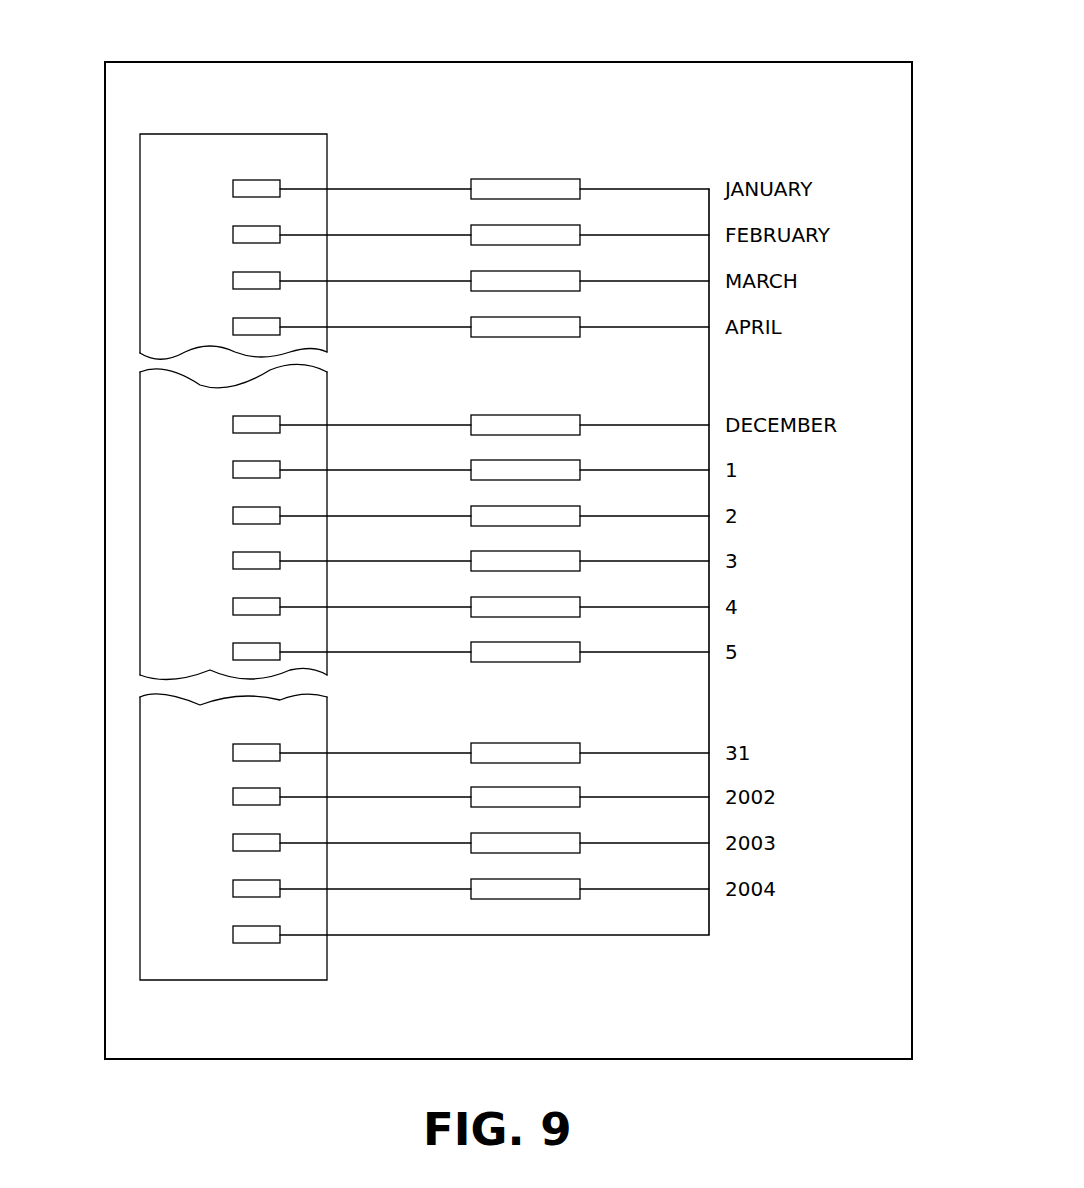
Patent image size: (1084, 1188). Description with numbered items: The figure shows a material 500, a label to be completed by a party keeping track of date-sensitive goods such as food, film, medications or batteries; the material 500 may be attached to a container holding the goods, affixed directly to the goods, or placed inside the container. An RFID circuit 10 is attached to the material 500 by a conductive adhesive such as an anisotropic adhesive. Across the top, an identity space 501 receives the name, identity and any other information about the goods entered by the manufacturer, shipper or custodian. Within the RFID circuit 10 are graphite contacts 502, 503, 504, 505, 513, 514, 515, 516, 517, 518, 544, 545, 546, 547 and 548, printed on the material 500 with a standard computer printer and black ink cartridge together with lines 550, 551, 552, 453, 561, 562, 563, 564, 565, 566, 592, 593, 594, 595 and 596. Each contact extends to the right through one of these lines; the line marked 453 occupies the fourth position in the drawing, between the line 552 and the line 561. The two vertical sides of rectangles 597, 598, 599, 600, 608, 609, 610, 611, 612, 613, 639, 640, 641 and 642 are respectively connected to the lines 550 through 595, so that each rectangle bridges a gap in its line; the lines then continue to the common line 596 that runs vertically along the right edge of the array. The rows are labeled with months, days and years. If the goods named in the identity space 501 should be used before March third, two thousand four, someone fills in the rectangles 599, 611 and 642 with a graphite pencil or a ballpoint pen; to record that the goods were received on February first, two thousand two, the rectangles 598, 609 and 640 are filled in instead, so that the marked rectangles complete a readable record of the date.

The material 500 is at (703, 78).
The RFID circuit 10 is at (262, 147).
The identity space 501 is at (533, 92).
The graphite contact 502 is at (235, 181).
The graphite contact 503 is at (235, 227).
The graphite contact 504 is at (235, 273).
The graphite contact 505 is at (235, 319).
The graphite contact 513 is at (235, 417).
The graphite contact 514 is at (235, 462).
The graphite contact 515 is at (235, 508).
The graphite contact 516 is at (235, 553).
The graphite contact 517 is at (235, 599).
The graphite contact 518 is at (235, 644).
The graphite contact 544 is at (235, 745).
The graphite contact 545 is at (235, 789).
The graphite contact 546 is at (235, 835).
The graphite contact 547 is at (235, 881).
The graphite contact 548 is at (235, 927).
The line 550 is at (415, 187).
The line 551 is at (415, 233).
The line 552 is at (415, 279).
The connection line 453 is at (415, 325).
The line 561 is at (415, 423).
The line 562 is at (415, 468).
The line 563 is at (415, 514).
The line 564 is at (415, 559).
The line 565 is at (415, 605).
The line 566 is at (415, 650).
The line 592 is at (415, 751).
The line 593 is at (415, 795).
The line 594 is at (415, 841).
The line 595 is at (415, 887).
The line 596 is at (435, 933).
The rectangle 597 is at (580, 180).
The rectangle 598 is at (580, 226).
The rectangle 599 is at (580, 272).
The rectangle 600 is at (580, 318).
The rectangle 608 is at (580, 416).
The rectangle 609 is at (580, 461).
The rectangle 610 is at (580, 507).
The rectangle 611 is at (580, 552).
The rectangle 612 is at (580, 598).
The rectangle 613 is at (580, 643).
The rectangle 639 is at (580, 744).
The rectangle 640 is at (580, 788).
The rectangle 641 is at (580, 834).
The rectangle 642 is at (580, 880).